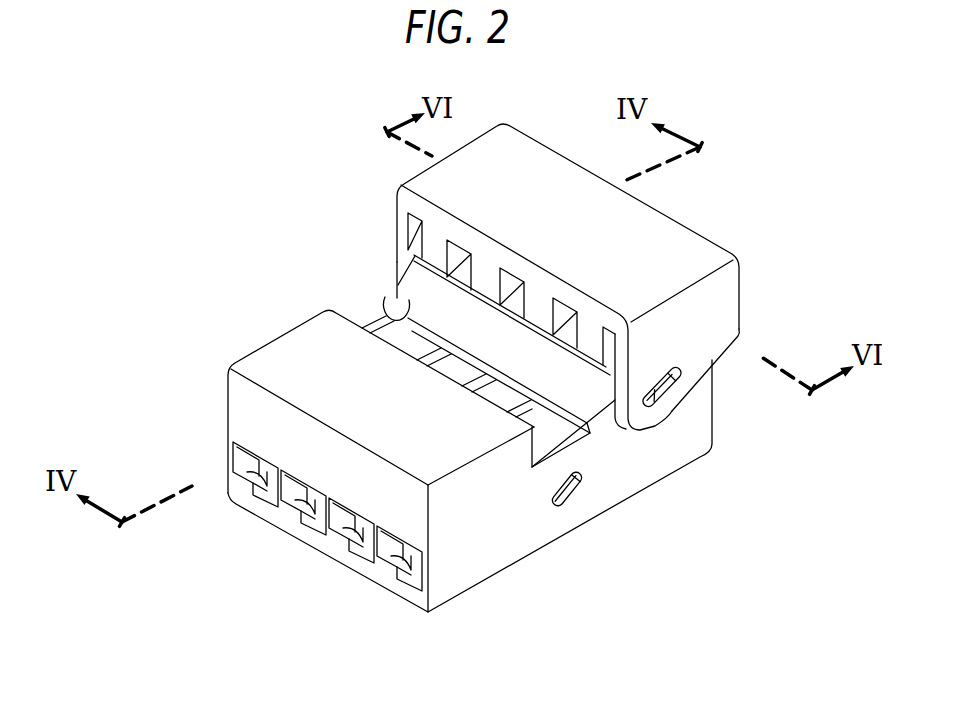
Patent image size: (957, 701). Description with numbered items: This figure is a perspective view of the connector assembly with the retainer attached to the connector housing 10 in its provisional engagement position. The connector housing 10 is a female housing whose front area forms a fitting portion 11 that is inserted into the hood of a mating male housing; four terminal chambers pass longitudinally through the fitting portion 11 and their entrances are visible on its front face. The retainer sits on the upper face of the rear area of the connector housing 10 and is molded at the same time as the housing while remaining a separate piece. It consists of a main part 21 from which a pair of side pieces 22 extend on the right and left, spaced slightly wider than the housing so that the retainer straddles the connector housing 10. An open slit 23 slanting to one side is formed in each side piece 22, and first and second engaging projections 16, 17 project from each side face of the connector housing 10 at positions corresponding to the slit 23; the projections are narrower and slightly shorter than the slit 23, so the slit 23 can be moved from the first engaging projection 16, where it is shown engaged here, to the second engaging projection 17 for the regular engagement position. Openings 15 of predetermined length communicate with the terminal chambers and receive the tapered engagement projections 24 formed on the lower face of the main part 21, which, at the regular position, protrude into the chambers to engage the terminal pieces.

The connector housing 10 is at (303, 287).
The fitting portion 11 is at (300, 386).
The opening 15 is at (395, 305).
The first engaging projection 16 is at (672, 412).
The second engaging projection 17 is at (578, 503).
The main part 21 is at (696, 250).
The side piece 22 is at (713, 323).
The open slit 23 is at (683, 398).
The engagement projection 24 is at (440, 247).